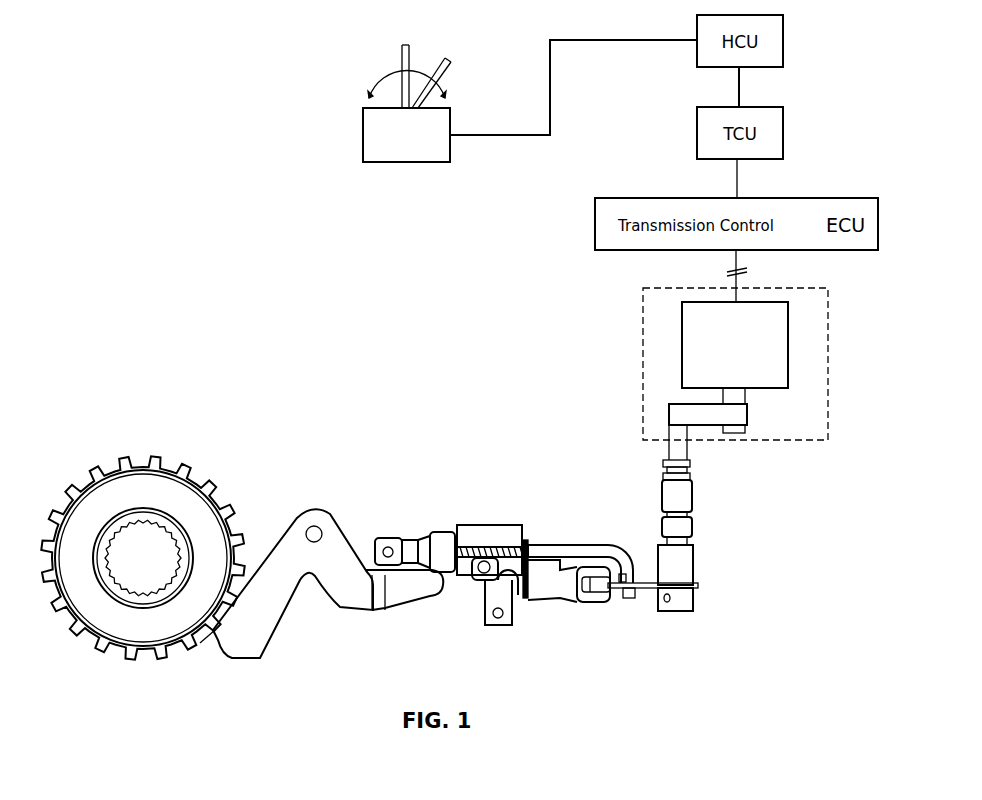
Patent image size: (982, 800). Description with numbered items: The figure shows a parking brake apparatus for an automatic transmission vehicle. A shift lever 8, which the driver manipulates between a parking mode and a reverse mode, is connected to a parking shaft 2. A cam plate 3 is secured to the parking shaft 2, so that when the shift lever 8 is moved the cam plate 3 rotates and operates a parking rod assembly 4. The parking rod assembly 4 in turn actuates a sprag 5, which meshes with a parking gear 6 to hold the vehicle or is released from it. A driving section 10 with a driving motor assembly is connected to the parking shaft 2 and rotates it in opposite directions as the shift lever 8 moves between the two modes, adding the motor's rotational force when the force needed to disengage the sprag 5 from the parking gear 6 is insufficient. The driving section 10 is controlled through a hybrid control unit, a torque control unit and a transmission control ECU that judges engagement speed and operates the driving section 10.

The parking shaft 2 is at (690, 496).
The cam plate 3 is at (700, 585).
The parking rod assembly 4 is at (553, 540).
The sprag 5 is at (315, 520).
The parking gear 6 is at (141, 478).
The shift lever 8 is at (363, 141).
The driving section 10 is at (829, 322).